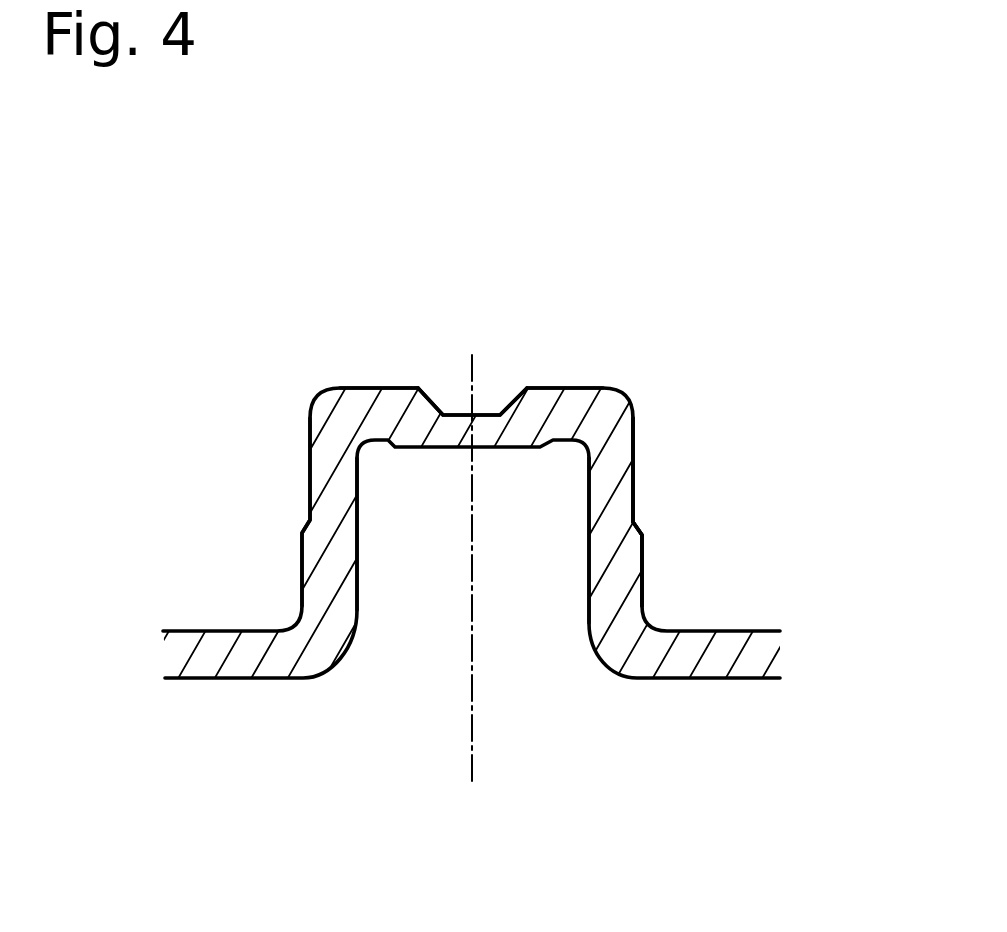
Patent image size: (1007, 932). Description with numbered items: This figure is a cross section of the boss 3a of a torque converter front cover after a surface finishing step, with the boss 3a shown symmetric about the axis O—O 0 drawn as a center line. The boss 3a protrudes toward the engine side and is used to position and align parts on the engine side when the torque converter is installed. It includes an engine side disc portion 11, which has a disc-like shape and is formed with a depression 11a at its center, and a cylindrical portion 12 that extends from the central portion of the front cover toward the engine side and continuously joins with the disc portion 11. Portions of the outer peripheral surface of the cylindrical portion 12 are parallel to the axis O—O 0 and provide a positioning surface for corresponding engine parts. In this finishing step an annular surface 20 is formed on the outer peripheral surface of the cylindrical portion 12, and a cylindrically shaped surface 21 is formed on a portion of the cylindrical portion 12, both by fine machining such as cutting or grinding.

The axis O—O 0 is at (470, 544).
The boss 3a is at (703, 317).
The engine side disc portion 11 is at (365, 410).
The depression 11a is at (492, 413).
The cylindrical portion 12 is at (340, 522).
The annular surface 20 is at (393, 388).
The cylindrically shaped surface 21 is at (633, 448).